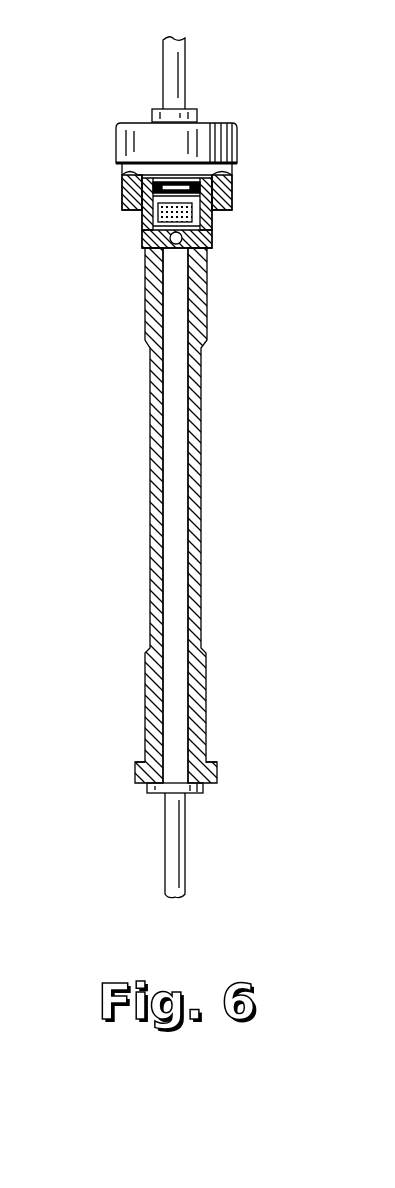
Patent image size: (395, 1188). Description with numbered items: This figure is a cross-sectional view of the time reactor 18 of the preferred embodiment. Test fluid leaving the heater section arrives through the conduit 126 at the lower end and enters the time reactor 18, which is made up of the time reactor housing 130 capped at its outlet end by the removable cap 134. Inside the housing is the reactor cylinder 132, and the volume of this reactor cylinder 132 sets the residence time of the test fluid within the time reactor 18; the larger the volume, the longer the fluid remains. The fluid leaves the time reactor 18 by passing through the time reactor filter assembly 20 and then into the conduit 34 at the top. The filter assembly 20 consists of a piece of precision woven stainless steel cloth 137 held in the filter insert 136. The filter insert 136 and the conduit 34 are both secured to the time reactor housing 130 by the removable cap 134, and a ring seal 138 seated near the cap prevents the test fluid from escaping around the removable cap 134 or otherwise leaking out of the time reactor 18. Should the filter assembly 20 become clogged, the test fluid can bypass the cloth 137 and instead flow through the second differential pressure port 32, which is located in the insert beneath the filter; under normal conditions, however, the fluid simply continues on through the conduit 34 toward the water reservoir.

The time reactor 18 is at (141, 489).
The time reactor filter assembly 20 is at (120, 105).
The second differential pressure port 32 is at (174, 252).
The conduit 34 is at (170, 70).
The conduit 126 is at (185, 843).
The time reactor housing 130 is at (199, 558).
The reactor cylinder 132 is at (173, 478).
The removable cap 134 is at (117, 147).
The filter insert 136 is at (212, 227).
The precision woven stainless steel cloth 137 is at (142, 225).
The ring seal 138 is at (233, 190).